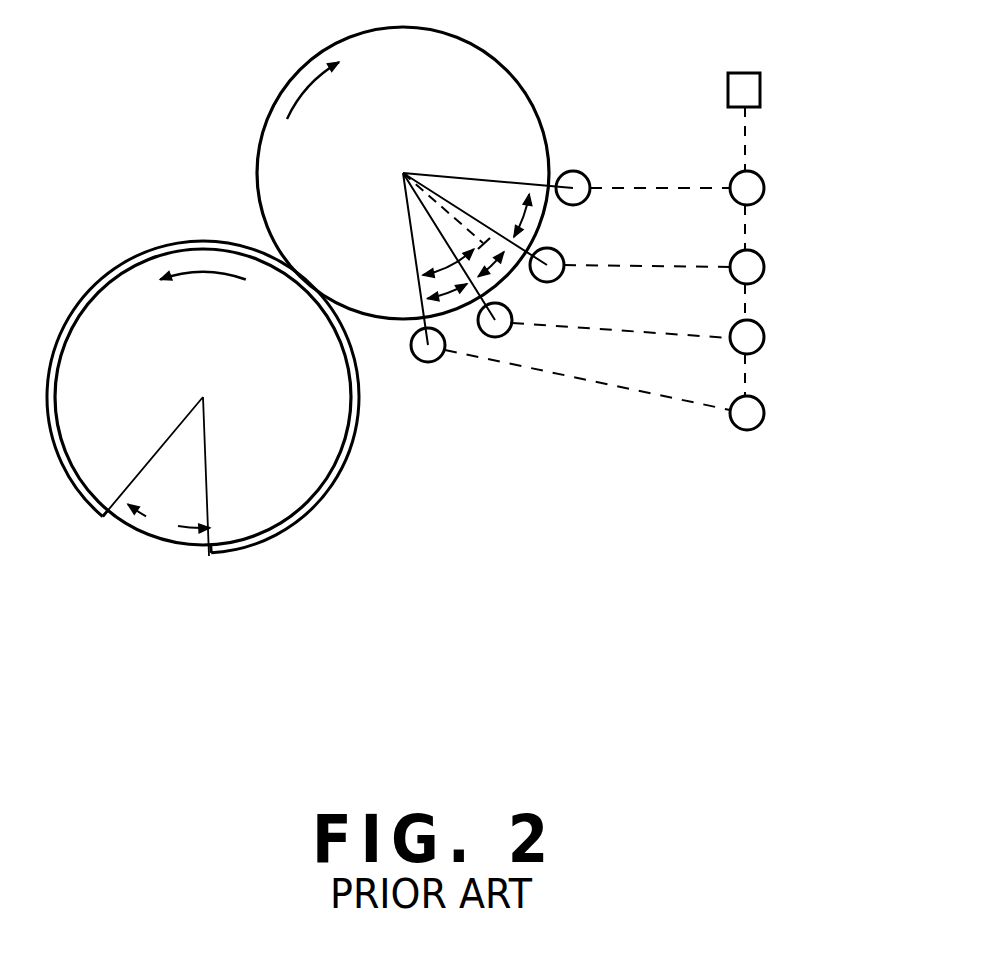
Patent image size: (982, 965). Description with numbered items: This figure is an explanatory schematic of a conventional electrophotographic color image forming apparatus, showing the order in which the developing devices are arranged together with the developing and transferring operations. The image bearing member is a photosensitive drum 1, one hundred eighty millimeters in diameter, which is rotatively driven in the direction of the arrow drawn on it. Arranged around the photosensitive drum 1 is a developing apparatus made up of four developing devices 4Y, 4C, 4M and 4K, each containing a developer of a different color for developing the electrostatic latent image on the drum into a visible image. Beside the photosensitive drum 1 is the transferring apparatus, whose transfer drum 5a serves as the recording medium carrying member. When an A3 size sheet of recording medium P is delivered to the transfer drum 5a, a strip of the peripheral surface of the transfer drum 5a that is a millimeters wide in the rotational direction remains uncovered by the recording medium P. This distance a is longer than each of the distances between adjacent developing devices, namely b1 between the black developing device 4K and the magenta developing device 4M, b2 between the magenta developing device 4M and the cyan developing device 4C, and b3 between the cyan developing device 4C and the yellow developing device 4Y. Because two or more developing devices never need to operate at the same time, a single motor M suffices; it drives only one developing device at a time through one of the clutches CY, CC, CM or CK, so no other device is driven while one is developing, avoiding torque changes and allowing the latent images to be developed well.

The photosensitive drum 1 is at (478, 72).
The yellow developing device 4Y is at (585, 172).
The cyan developing device 4C is at (557, 253).
The magenta developing device 4M is at (503, 335).
The black developing device 4K is at (433, 360).
The motor M is at (760, 90).
The clutch for yellow developing device CY is at (764, 188).
The clutch for cyan developing device CC is at (764, 267).
The clutch for magenta developing device CM is at (764, 337).
The clutch for black developing device CK is at (764, 413).
The uncovered strip width a is at (430, 273).
The distance between black and magenta developing devices b1 is at (432, 299).
The distance between magenta and cyan developing devices b2 is at (506, 268).
The distance between cyan and yellow developing devices b3 is at (520, 205).
The transfer drum 5a is at (168, 545).
The recording medium P is at (312, 508).